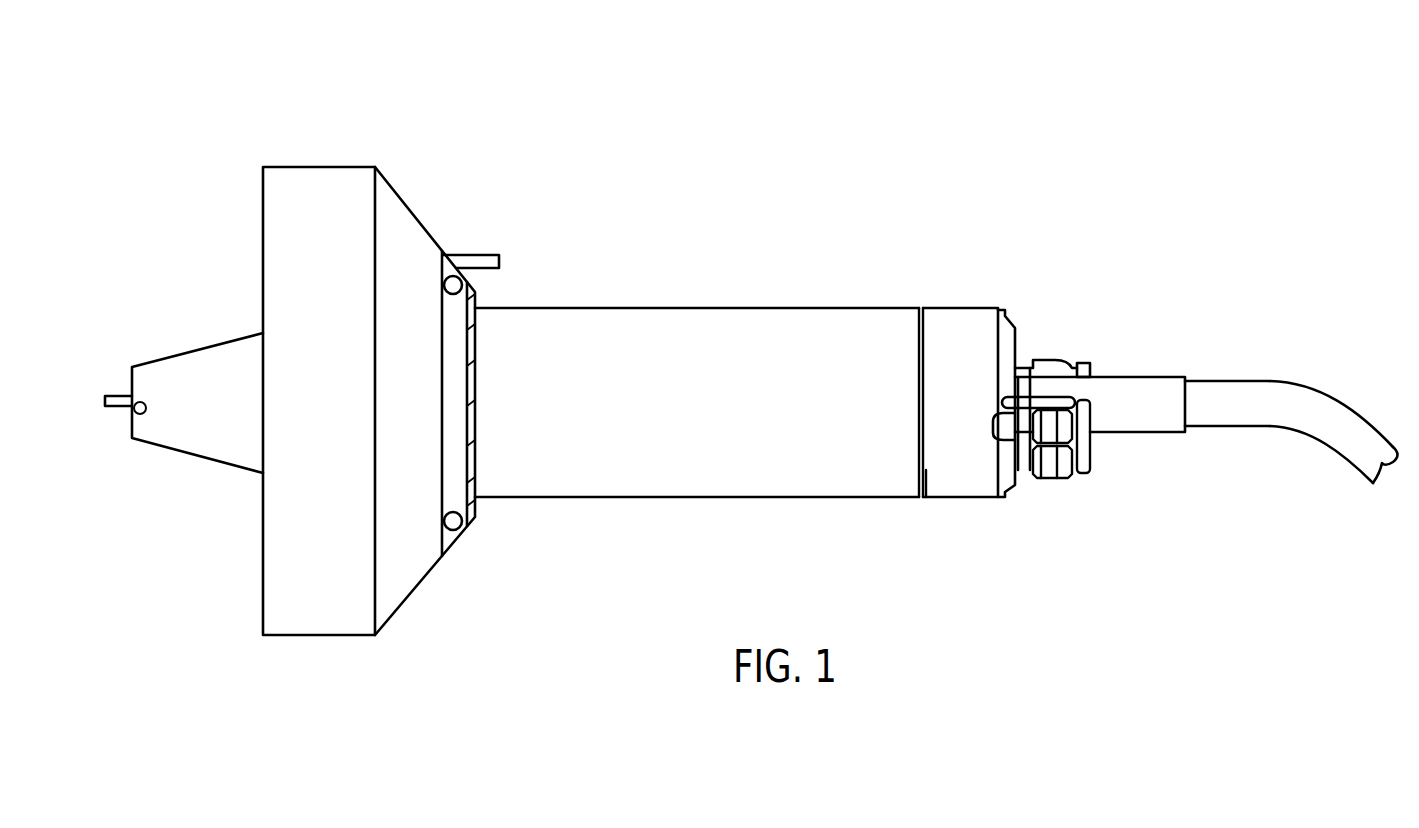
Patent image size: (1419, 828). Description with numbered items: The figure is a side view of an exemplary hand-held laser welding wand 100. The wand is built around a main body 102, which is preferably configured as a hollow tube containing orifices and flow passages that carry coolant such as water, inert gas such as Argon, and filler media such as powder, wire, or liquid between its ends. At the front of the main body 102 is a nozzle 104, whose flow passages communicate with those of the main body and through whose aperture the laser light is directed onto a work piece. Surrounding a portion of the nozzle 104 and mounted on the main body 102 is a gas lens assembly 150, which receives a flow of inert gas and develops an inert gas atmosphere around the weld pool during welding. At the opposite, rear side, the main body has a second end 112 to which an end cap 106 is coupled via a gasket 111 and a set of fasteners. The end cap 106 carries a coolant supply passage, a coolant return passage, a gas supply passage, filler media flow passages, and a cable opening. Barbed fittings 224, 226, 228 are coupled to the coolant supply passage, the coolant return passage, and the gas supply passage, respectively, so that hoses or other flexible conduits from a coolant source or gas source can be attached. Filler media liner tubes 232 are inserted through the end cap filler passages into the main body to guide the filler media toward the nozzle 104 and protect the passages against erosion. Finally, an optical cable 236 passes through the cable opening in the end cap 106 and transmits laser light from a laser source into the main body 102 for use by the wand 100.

The hand-held laser welding wand 100 is at (1137, 130).
The main body 102 is at (625, 312).
The nozzle 104 is at (190, 352).
The end cap 106 is at (970, 308).
The gasket 111 is at (926, 485).
The second end 112 is at (921, 308).
The gas lens assembly 150 is at (402, 182).
The barbed fitting 224 is at (1082, 362).
The barbed fitting 226 is at (1093, 410).
The barbed fitting 228 is at (1093, 456).
The filler media liner tube 232 is at (1048, 403).
The optical cable 236 is at (1252, 387).